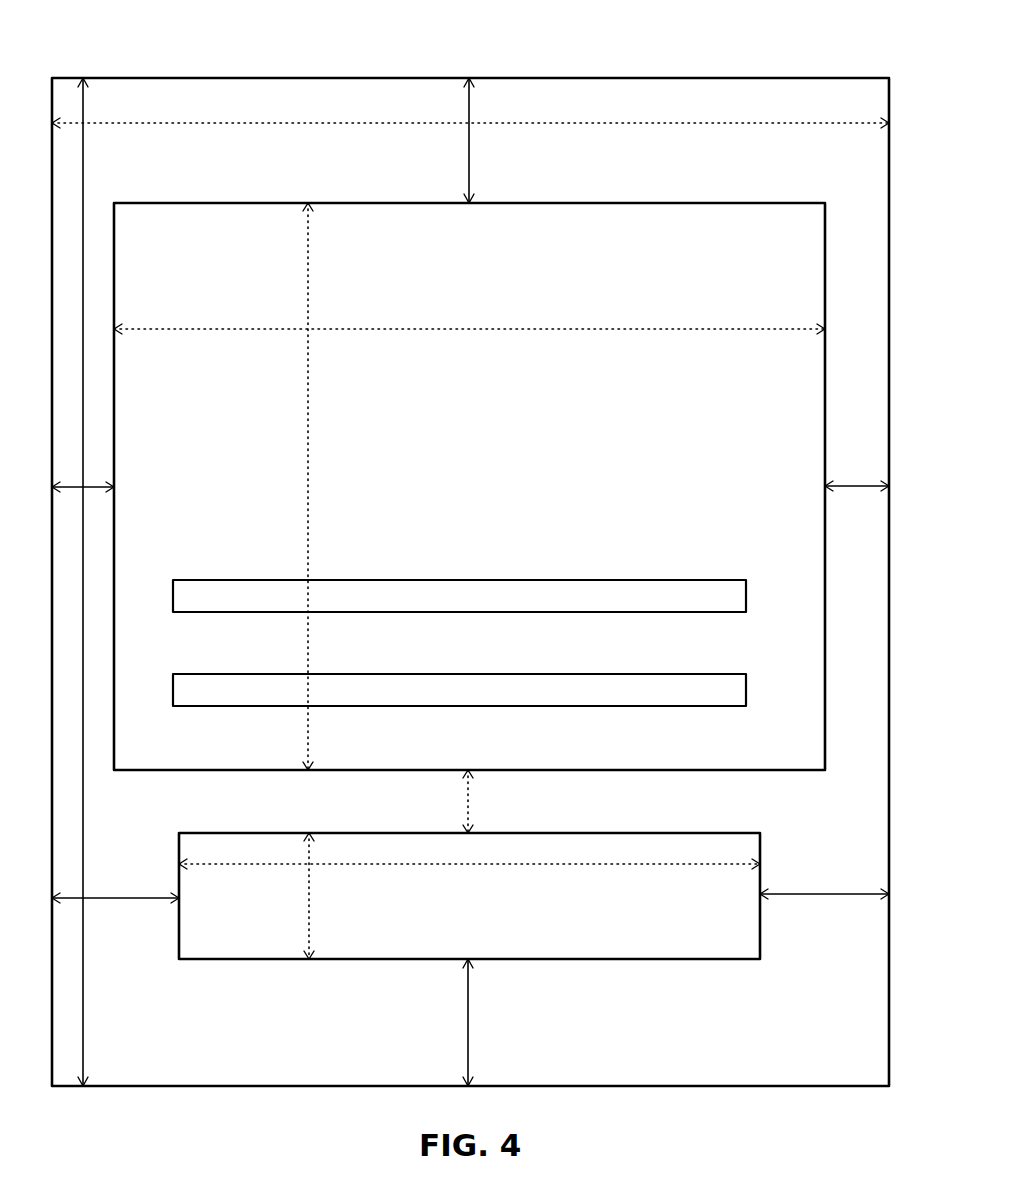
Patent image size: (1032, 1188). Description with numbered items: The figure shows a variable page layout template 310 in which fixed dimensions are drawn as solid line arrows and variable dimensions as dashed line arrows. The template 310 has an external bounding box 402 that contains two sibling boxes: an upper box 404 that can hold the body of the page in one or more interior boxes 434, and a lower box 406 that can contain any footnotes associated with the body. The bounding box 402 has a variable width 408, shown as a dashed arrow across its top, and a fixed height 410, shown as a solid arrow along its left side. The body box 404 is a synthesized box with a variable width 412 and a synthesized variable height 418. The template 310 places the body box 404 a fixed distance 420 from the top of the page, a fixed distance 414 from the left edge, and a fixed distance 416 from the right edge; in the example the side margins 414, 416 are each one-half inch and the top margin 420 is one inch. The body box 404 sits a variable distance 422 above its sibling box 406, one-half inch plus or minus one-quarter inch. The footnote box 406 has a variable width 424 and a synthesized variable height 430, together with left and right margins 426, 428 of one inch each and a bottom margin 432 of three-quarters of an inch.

The variable page layout template 310 is at (173, 52).
The external bounding box 402 is at (228, 80).
The sibling box 404 is at (230, 202).
The sibling box 406 is at (277, 960).
The variable width 408 is at (825, 122).
The fixed height 410 is at (84, 195).
The variable width 412 is at (599, 328).
The fixed distance 414 is at (85, 487).
The fixed distance 416 is at (866, 485).
The synthesized variable height 418 is at (308, 423).
The fixed distance 420 is at (469, 157).
The variable distance 422 is at (468, 783).
The variable width 424 is at (598, 866).
The left margin 426 is at (146, 898).
The right margin 428 is at (850, 894).
The synthesized variable height 430 is at (310, 894).
The bottom margin 432 is at (470, 1020).
The interior boxes 434 is at (609, 580).